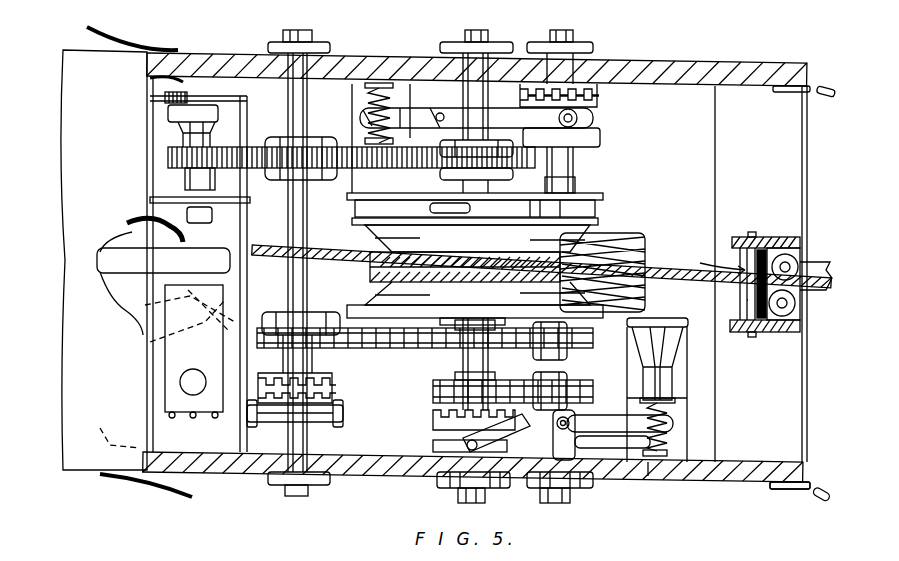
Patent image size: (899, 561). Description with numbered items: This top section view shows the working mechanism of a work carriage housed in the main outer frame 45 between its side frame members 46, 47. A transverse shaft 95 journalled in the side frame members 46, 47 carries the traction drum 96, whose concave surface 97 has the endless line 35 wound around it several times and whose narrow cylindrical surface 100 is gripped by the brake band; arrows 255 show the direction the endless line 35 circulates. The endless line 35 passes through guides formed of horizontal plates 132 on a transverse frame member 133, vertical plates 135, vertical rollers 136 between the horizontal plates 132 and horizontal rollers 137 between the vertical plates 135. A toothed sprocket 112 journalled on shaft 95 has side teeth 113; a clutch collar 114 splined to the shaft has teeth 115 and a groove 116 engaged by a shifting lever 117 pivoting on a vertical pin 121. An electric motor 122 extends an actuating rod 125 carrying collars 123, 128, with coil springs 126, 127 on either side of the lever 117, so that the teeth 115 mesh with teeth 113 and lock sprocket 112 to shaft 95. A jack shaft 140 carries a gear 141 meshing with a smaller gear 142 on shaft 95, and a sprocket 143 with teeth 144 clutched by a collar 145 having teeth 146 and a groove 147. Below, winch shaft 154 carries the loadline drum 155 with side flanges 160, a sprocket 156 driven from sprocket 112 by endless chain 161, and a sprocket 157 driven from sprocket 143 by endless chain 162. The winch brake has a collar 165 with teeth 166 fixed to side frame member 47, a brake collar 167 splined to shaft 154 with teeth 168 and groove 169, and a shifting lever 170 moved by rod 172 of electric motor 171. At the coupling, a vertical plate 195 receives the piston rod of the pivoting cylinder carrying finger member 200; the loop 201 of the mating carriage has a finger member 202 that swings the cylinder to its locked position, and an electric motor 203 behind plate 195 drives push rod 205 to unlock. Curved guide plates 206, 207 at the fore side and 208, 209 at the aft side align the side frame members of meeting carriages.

The endless line 35 is at (270, 250).
The main outer frame 45 is at (706, 486).
The side frame member 46 is at (752, 466).
The side frame member 47 is at (748, 66).
The shaft 95 is at (465, 36).
The endless line engaging traction drum 96 is at (606, 234).
The concave line engaging surface 97 is at (365, 232).
The narrow cylindrical surface 100 is at (502, 212).
The toothed sprocket 112 is at (462, 366).
The teeth 113 is at (440, 388).
The clutch collar 114 is at (440, 485).
The teeth 115 is at (433, 418).
The central peripheral groove 116 is at (462, 446).
The shifting lever 117 is at (615, 432).
The vertical pin 121 is at (490, 497).
The electric motor 122 is at (680, 355).
The fixed collar 123 is at (648, 478).
The actuating rod 125 is at (688, 437).
The coil spring 126 is at (590, 484).
The coil spring 127 is at (688, 415).
The collar 128 is at (688, 393).
The horizontal plates 132 is at (766, 228).
The transversely extending frame member 133 is at (790, 258).
The vertical plates 135 is at (742, 238).
The vertical rollers 136 is at (762, 248).
The horizontal rollers 137 is at (745, 300).
The jack shaft 140 is at (283, 36).
The gear 141 is at (258, 148).
The smaller gear 142 is at (540, 162).
The toothed sprocket 143 is at (305, 318).
The teeth 144 is at (285, 340).
The clutch collar 145 is at (270, 422).
The teeth 146 is at (320, 385).
The central peripheral groove 147 is at (316, 424).
The shaft 154 is at (575, 183).
The drum 155 is at (640, 252).
The toothed sprocket 156 is at (525, 360).
The toothed sprocket 157 is at (568, 365).
The side flanges 160 is at (575, 300).
The endless chain 161 is at (440, 392).
The endless chain 162 is at (378, 348).
The collar 165 is at (600, 94).
The teeth 166 is at (580, 62).
The brake collar 167 is at (585, 138).
The teeth 168 is at (595, 112).
The central peripheral groove 169 is at (580, 122).
The shifting lever 170 is at (515, 112).
The electric motor 171 is at (362, 120).
The rod 172 is at (386, 85).
The vertical plate 195 is at (125, 214).
The finger member 200 is at (144, 308).
The loop 201 is at (115, 270).
The finger member 202 is at (150, 342).
The electric motor 203 is at (185, 112).
The push rod 205 is at (152, 198).
The curved guide plate 206 is at (132, 430).
The curved guide plate 207 is at (105, 28).
The curved guide plate 208 is at (160, 489).
The curved guide plate 209 is at (150, 80).
The arrows 255 is at (700, 263).